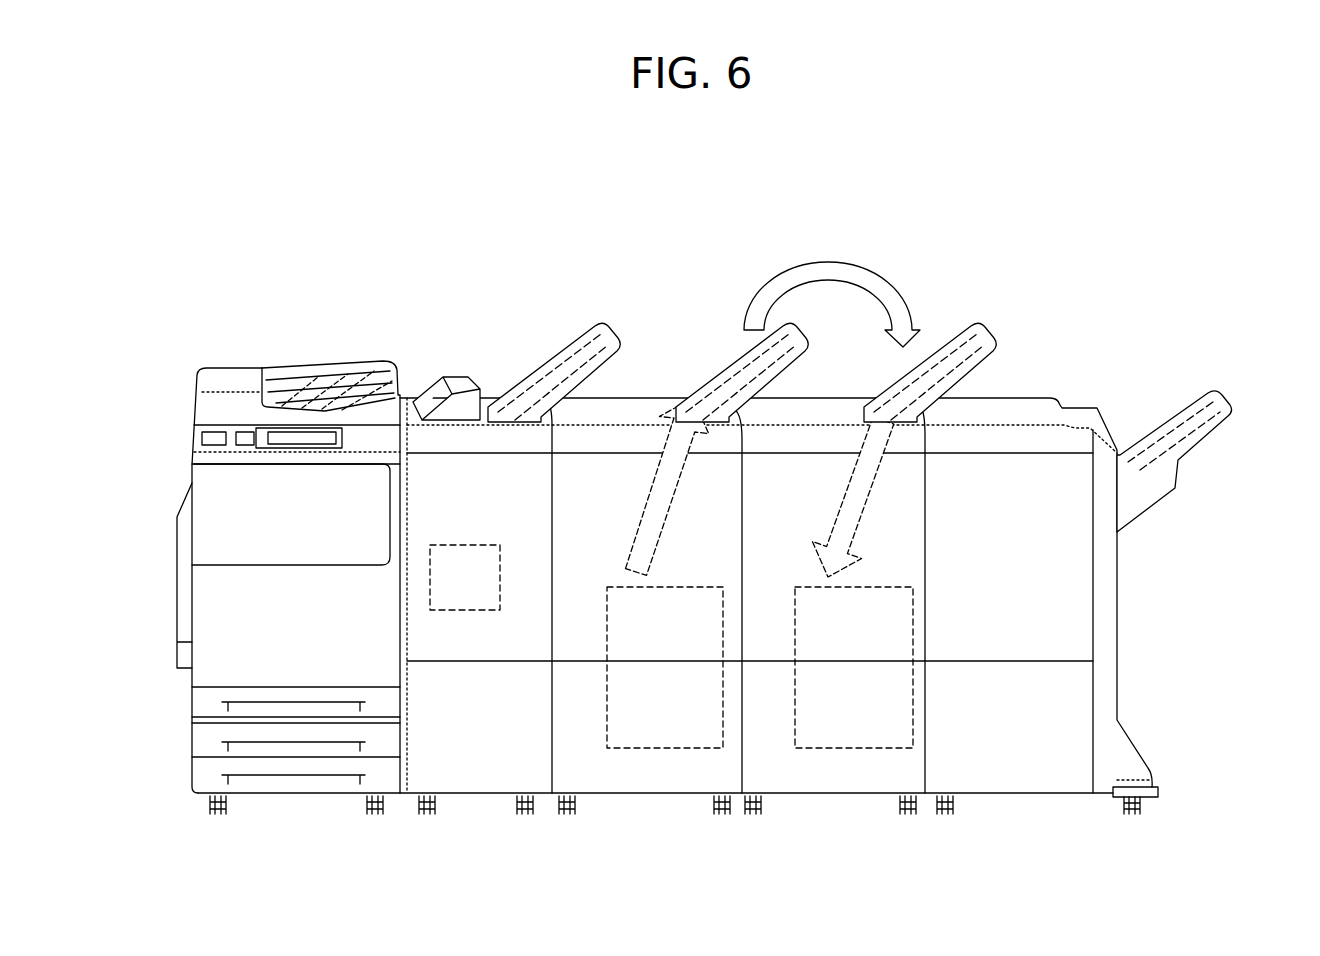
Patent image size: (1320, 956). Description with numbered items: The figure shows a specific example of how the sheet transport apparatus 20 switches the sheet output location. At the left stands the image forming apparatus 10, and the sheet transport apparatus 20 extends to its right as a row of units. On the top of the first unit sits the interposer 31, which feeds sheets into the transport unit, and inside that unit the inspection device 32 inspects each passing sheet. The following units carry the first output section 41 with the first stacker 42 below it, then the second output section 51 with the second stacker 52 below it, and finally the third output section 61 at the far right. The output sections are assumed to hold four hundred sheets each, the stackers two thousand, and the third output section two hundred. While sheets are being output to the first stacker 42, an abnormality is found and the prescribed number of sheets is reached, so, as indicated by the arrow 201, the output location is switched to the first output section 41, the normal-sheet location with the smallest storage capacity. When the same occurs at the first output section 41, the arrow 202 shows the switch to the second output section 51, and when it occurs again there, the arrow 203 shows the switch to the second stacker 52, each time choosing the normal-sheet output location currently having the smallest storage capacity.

The image forming apparatus 10 is at (260, 260).
The sheet transport apparatus 20 is at (816, 495).
The interposer 31 is at (547, 357).
The inspection device 32 is at (462, 545).
The first output section 41 is at (723, 363).
The first stacker 42 is at (700, 587).
The second output section 51 is at (950, 330).
The second stacker 52 is at (889, 587).
The third output section 61 is at (1168, 417).
The arrow 201 is at (643, 512).
The arrow 202 is at (826, 258).
The arrow 203 is at (836, 512).